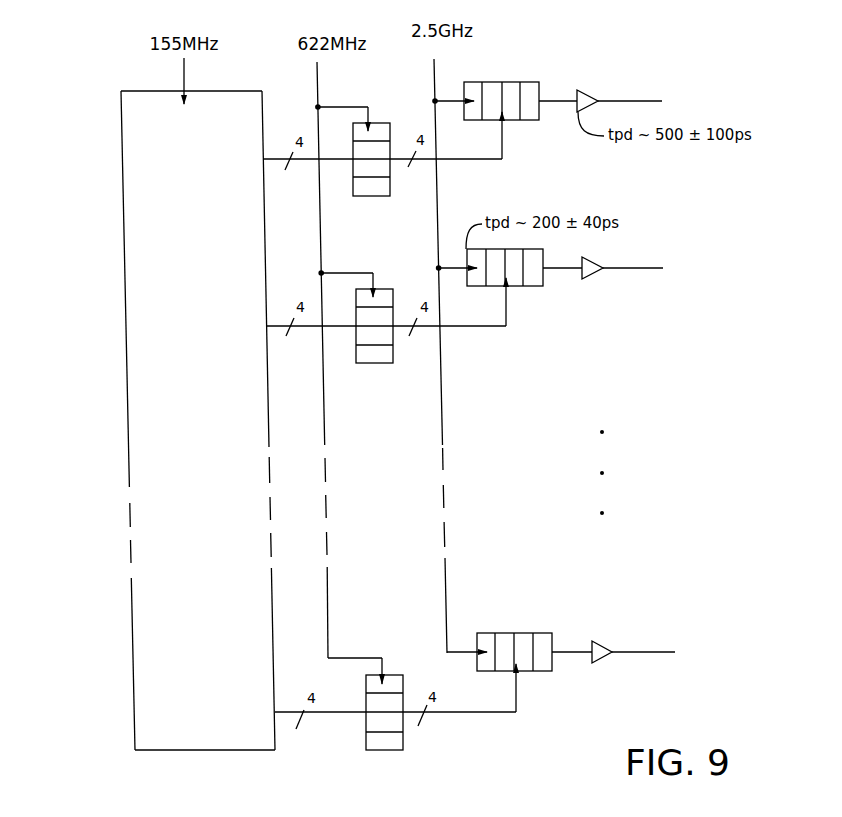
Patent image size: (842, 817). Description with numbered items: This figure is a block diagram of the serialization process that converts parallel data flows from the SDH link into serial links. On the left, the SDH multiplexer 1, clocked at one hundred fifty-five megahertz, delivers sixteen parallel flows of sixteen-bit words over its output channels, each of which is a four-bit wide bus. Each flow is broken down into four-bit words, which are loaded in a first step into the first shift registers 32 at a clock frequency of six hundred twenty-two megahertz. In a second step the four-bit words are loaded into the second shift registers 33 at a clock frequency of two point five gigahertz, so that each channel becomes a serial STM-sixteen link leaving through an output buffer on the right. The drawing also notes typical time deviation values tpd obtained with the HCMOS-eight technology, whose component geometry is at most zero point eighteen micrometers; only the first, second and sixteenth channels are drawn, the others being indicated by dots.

The SDH multiplexer 1 is at (128, 396).
The first shift registers 32 is at (362, 196).
The second shift registers 33 is at (509, 82).